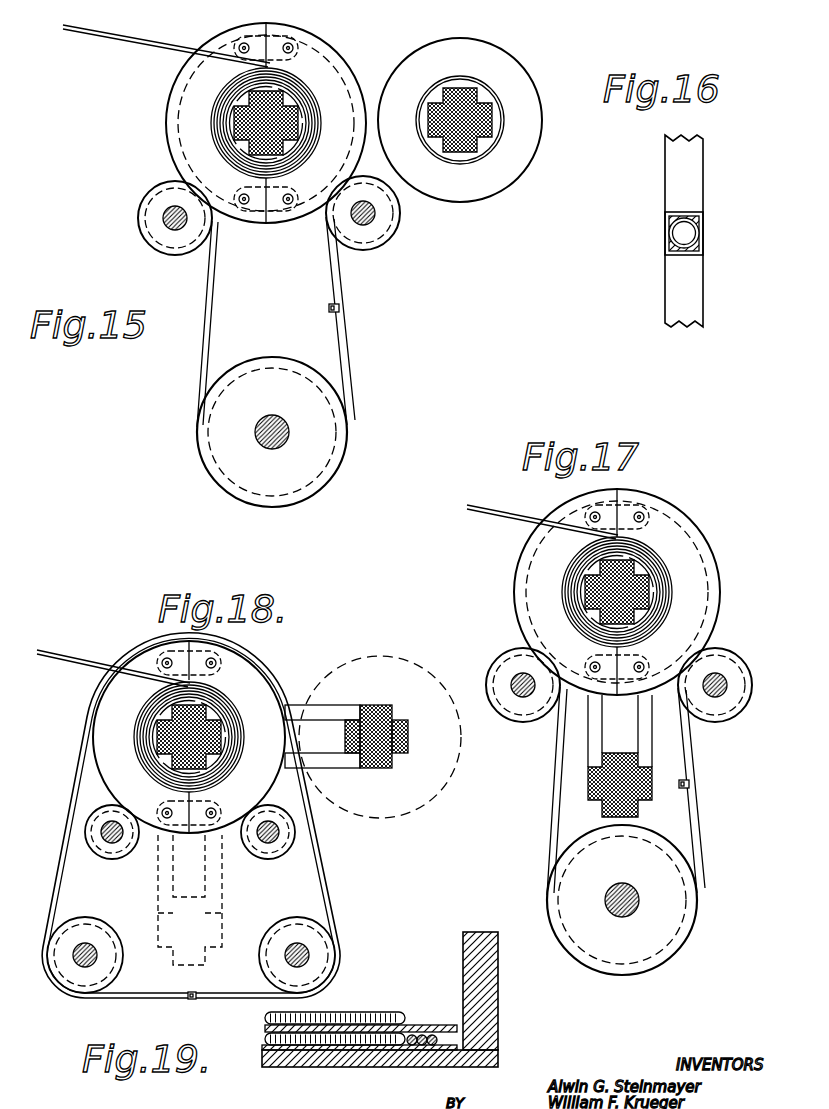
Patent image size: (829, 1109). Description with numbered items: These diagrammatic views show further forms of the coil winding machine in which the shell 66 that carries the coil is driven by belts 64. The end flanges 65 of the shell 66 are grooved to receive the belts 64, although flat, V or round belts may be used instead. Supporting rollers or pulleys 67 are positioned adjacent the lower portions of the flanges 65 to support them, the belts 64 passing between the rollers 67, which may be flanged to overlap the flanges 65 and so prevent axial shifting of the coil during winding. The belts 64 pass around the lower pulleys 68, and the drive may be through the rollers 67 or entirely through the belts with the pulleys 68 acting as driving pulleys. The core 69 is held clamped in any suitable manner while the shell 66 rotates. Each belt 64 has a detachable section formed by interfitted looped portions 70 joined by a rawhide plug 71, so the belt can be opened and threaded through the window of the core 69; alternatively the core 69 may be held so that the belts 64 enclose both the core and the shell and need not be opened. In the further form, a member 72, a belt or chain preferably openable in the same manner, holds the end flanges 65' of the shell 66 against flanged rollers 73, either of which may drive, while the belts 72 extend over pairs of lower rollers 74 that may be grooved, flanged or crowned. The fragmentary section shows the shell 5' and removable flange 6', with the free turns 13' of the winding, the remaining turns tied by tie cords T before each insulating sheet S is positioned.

In FIG. 15, the belts 64 is at (354, 336).
In FIG. 16, the belts 64 is at (678, 294).
In FIG. 17, the belts 64 is at (700, 822).
In FIG. 15, the end flanges 65 is at (217, 120).
In FIG. 17, the end flanges 65 is at (610, 592).
In FIG. 18, the end flanges 65' is at (166, 727).
In FIG. 15, the shell 66 is at (226, 112).
In FIG. 17, the shell 66 is at (577, 580).
In FIG. 18, the shell 66 is at (150, 723).
In FIG. 15, the supporting rollers or pulleys 67 is at (138, 218).
In FIG. 17, the supporting rollers or pulleys 67 is at (516, 664).
In FIG. 15, the lower pulleys 68 is at (342, 446).
In FIG. 17, the lower pulleys 68 is at (676, 914).
In FIG. 15, the core 69 is at (466, 148).
In FIG. 17, the core 69 is at (642, 776).
In FIG. 18, the core 69 is at (373, 705).
In FIG. 16, the looped portions 70 is at (704, 218).
In FIG. 16, the plug 71 is at (682, 234).
In FIG. 18, the member 72 is at (320, 862).
In FIG. 18, the rollers 73 is at (116, 862).
In FIG. 18, the lower rollers 74 is at (82, 916).
In FIG. 19, the tie cords T is at (354, 1012).
In FIG. 19, the insulating sheet S is at (432, 1025).
In FIG. 19, the removable flange 6' is at (499, 991).
In FIG. 19, the shell 5' is at (380, 1076).
In FIG. 19, the free turns 13' is at (359, 1073).